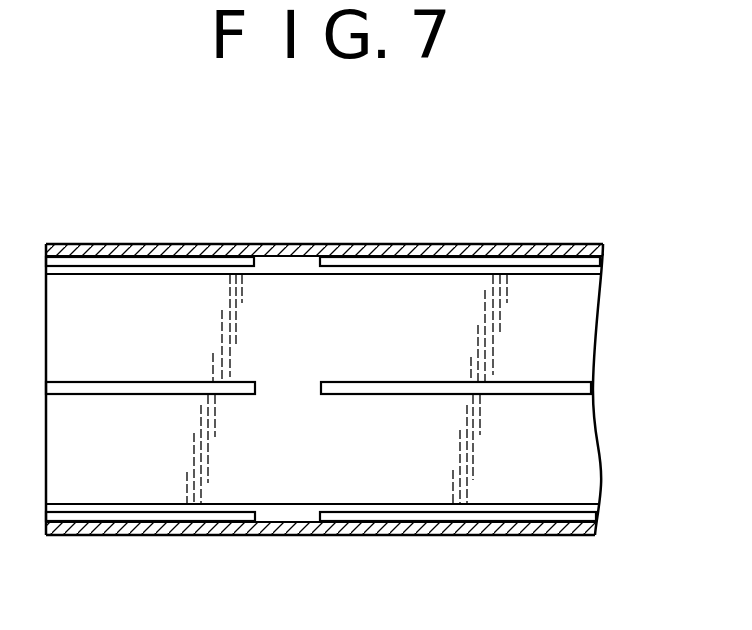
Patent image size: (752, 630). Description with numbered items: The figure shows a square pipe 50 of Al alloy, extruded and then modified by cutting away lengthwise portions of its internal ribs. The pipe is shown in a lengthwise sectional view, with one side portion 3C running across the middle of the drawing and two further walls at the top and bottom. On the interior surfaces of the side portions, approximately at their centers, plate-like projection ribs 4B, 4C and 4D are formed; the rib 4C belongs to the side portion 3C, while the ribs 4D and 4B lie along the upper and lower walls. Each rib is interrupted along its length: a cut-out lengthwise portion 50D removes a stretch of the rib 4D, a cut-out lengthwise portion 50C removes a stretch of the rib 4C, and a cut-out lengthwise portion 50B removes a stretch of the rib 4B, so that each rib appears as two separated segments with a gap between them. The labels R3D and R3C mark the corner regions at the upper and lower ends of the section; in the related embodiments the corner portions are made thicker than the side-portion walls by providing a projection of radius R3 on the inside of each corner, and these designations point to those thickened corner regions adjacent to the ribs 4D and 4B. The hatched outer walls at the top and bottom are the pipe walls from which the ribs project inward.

The square pipe 50 is at (472, 179).
The plate-like projection rib 4D is at (190, 262).
The cut-out lengthwise portion 50D is at (295, 265).
The upper discharge region R3D is at (537, 270).
The side portion 3C is at (578, 360).
The plate-like projection rib 4C is at (140, 396).
The cut-out lengthwise portion 50C is at (292, 395).
The plate-like projection rib 4B is at (158, 518).
The cut-out lengthwise portion 50B is at (290, 512).
The lower discharge region R3C is at (547, 508).